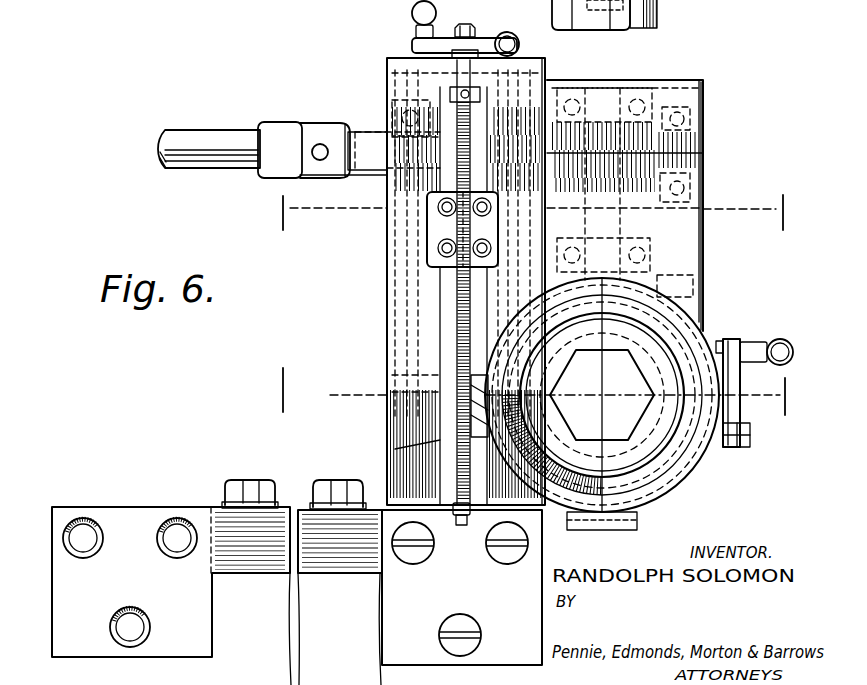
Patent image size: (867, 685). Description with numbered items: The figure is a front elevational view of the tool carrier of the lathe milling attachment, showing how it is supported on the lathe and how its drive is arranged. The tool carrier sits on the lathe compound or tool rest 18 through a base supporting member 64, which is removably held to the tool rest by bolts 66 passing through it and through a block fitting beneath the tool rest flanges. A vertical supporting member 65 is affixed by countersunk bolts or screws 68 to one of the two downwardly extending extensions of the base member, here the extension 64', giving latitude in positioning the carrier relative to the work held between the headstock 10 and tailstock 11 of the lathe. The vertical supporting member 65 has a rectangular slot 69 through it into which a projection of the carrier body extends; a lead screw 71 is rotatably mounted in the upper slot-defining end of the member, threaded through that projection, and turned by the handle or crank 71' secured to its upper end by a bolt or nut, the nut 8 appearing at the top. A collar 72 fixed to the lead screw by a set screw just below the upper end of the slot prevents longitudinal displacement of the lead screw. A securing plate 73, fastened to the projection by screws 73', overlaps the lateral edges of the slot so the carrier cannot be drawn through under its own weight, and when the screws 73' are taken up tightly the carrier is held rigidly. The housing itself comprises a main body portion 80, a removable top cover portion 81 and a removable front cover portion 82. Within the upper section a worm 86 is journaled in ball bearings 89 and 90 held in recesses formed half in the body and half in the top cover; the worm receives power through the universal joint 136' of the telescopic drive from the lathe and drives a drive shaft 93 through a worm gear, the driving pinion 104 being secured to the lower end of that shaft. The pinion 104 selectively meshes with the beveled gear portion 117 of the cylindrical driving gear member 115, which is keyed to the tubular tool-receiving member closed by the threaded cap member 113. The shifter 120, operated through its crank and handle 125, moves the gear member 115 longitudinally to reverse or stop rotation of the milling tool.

The handle nut 8 is at (465, 18).
The headstock 10 is at (535, 391).
The tailstock 11 is at (533, 212).
The tool rest 18 is at (335, 597).
The base supporting member 64 is at (239, 540).
The extension 64' is at (171, 567).
The vertical supporting member 65 is at (387, 286).
The bolts 66 is at (318, 481).
The countersunk bolts or screws 68 is at (460, 614).
The rectangular slot 69 is at (395, 449).
The lead screw 71 is at (416, 292).
The handle or crank 71' is at (450, 29).
The collar 72 is at (482, 98).
The securing plate 73 is at (438, 133).
The screws 73' is at (417, 235).
The main body portion 80 is at (703, 247).
The top cover portion 81 is at (703, 93).
The front cover portion 82 is at (678, 481).
The worm 86 is at (604, 80).
The ball bearing 89 is at (390, 192).
The ball bearing 90 is at (703, 127).
The drive shaft 93 is at (622, 224).
The driving pinion 104 is at (710, 310).
The threaded cap member 113 is at (602, 395).
The cylindrical driving gear member 115 is at (628, 15).
The beveled gear portion 117 is at (738, 382).
The shifter 120 is at (741, 411).
The handle 125 is at (783, 352).
The universal joint 136' is at (272, 137).